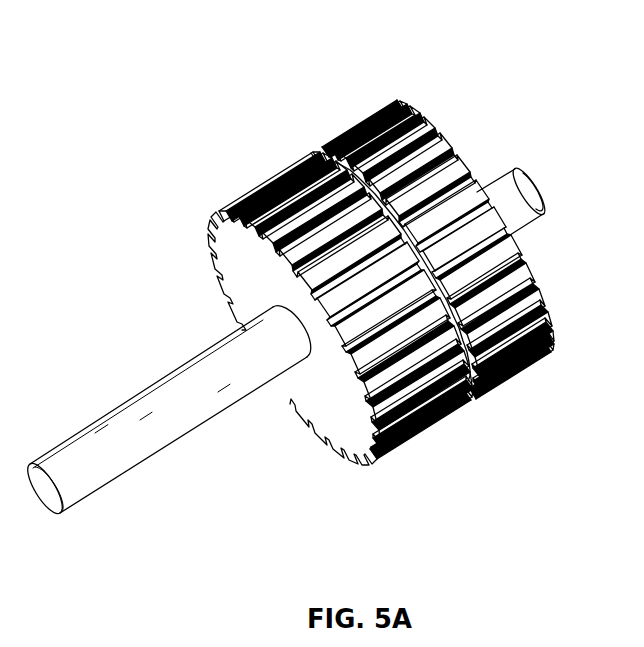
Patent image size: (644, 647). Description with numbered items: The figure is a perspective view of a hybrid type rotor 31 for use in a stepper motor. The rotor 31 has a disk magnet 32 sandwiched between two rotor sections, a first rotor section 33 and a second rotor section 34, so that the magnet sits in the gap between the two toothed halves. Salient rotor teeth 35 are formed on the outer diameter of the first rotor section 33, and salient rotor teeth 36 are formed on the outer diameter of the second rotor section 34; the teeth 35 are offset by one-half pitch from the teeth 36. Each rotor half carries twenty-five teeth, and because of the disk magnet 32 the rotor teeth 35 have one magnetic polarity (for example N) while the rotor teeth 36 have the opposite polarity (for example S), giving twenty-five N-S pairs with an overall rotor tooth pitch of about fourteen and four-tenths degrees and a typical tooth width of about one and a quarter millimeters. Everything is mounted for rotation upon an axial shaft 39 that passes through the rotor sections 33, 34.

The hybrid type rotor 31 is at (97, 74).
The disk magnet 32 is at (338, 182).
The first rotor section 33 is at (222, 210).
The second rotor section 34 is at (358, 118).
The salient rotor teeth 35 is at (432, 383).
The salient rotor teeth 36 is at (540, 310).
The axial shaft 39 is at (72, 452).